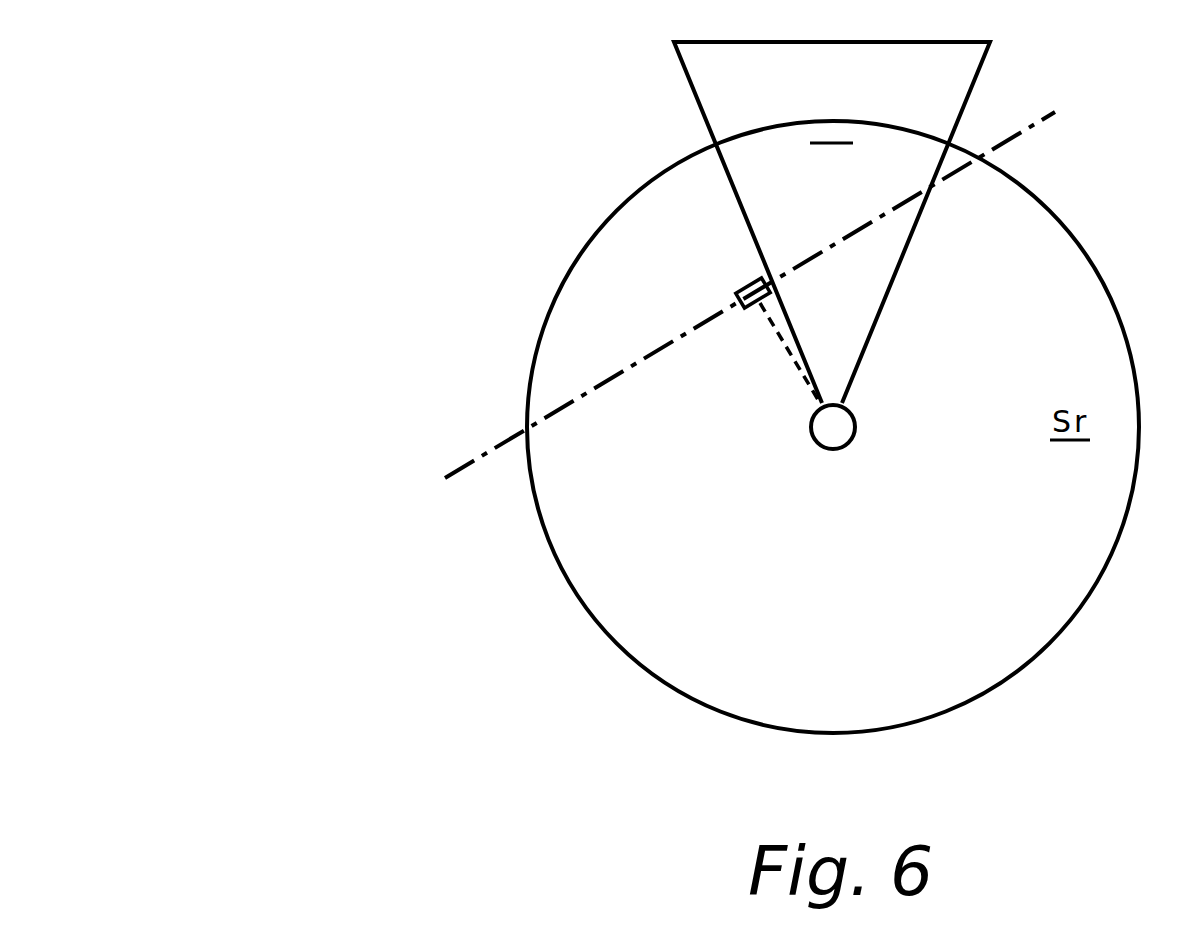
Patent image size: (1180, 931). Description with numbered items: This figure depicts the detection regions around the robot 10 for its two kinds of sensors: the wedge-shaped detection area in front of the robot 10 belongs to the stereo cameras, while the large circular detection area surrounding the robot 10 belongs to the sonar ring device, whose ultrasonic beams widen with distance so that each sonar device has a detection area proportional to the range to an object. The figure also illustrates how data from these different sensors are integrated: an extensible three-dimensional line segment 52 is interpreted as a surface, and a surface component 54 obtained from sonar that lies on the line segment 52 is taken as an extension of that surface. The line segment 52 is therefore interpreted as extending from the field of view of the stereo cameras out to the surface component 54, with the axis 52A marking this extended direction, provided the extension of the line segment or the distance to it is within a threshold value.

The robot 10 is at (857, 432).
The extensible three-dimensional line segment 52 is at (905, 260).
The axis of detection field 52A is at (480, 457).
The surface component 54 is at (748, 285).